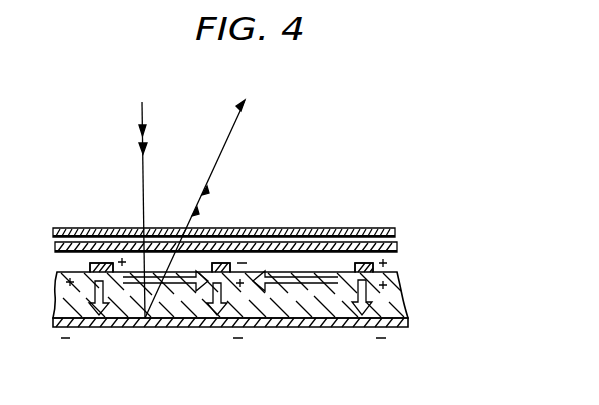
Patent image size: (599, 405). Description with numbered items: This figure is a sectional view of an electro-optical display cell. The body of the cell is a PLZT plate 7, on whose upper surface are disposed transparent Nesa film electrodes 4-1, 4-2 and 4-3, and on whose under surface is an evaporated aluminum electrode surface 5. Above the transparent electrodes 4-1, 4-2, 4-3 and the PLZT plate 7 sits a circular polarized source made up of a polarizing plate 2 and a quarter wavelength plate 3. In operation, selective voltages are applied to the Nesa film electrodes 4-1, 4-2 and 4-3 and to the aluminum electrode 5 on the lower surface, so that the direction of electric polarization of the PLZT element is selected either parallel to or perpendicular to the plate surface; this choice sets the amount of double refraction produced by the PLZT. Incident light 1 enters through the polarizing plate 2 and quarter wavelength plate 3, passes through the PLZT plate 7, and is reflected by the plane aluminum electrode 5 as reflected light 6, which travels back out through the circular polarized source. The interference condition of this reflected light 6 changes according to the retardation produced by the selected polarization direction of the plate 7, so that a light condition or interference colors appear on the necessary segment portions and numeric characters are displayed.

The incident light 1 is at (135, 203).
The polarizing plate 2 is at (397, 233).
The ¼ wavelength plate 3 is at (398, 248).
The transparent Nesa film electrode 4-1 is at (99, 262).
The transparent Nesa film electrode 4-2 is at (220, 262).
The transparent Nesa film electrode 4-3 is at (361, 262).
The aluminum electrode surface 5 is at (409, 325).
The reflected light 6 is at (204, 203).
The PLZT plate 7 is at (66, 312).